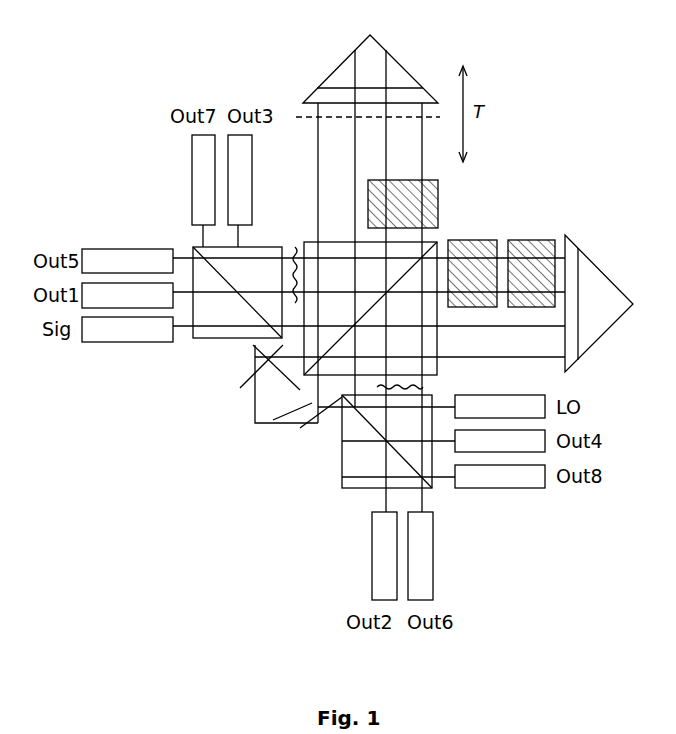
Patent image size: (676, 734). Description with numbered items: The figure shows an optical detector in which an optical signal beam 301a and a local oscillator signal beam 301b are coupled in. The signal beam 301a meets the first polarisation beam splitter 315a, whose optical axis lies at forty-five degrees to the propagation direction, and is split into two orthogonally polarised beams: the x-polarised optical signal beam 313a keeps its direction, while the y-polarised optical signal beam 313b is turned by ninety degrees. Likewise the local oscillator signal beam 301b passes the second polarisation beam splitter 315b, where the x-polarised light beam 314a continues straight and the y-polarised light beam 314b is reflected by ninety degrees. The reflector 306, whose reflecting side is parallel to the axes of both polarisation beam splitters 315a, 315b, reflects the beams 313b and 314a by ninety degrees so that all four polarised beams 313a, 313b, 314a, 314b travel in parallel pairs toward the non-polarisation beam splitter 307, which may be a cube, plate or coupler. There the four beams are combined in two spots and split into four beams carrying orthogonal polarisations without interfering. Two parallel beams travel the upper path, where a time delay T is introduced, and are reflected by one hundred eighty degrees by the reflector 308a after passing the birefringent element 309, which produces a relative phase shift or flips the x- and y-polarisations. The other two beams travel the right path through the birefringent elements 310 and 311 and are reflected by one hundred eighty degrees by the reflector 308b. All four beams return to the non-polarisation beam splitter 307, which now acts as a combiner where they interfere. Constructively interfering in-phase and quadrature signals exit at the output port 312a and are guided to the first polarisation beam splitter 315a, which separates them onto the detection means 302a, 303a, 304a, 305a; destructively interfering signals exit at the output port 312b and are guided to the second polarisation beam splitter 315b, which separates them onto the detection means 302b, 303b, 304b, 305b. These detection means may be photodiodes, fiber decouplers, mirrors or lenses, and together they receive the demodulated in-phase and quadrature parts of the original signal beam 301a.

The optical signal beam 301a is at (127, 329).
The detection means 302a is at (127, 295).
The detection means 303a is at (127, 261).
The detection means 304a is at (203, 180).
The detection means 305a is at (240, 180).
The local oscillator signal beam 301b is at (500, 406).
The detection means 302b is at (384, 556).
The detection means 303b is at (420, 556).
The detection means 304b is at (500, 476).
The detection means 305b is at (500, 441).
The reflector 306 is at (286, 384).
The non-polarisation beam splitter 307 is at (370, 309).
The reflector 308a is at (362, 48).
The reflector 308b is at (598, 268).
The birefringent element 309 is at (440, 196).
The birefringent element 310 is at (531, 262).
The birefringent element 311 is at (472, 262).
The output port 312a is at (294, 246).
The output port 312b is at (428, 387).
The polarised optical signal beam 313a is at (253, 345).
The polarised optical signal beam 313b is at (240, 388).
The x-polarised light beam 314a is at (273, 420).
The y-polarised light beam 314b is at (300, 428).
The first polarisation beam splitter 315a is at (210, 263).
The second polarisation beam splitter 315b is at (342, 490).